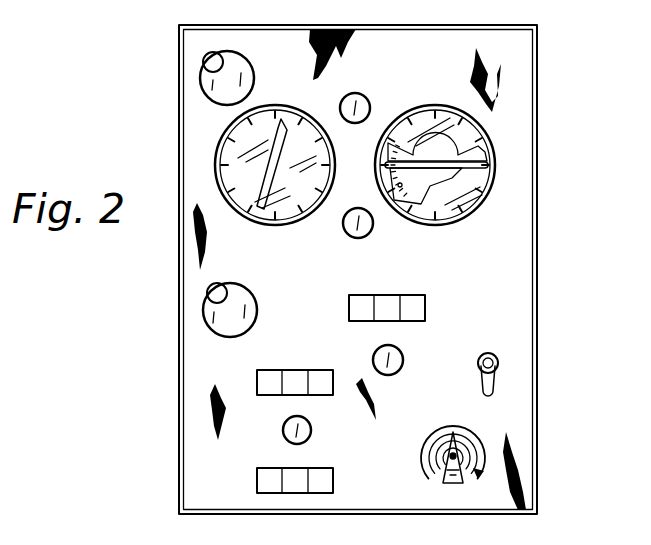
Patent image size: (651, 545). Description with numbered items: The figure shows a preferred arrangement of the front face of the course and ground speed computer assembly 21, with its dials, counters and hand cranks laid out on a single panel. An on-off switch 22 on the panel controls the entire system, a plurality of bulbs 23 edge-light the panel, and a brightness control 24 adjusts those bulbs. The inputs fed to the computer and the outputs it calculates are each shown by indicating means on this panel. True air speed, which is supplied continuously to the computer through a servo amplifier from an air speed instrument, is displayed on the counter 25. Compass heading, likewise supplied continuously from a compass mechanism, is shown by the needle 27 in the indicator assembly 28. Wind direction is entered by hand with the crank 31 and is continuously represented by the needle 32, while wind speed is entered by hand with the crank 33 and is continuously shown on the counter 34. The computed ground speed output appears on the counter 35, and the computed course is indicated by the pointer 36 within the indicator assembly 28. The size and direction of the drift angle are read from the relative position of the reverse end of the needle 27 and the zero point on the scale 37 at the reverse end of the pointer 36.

The computer assembly front face 21 is at (554, 162).
The on-off switch 22 is at (498, 364).
The bulbs 23 is at (361, 96).
The brightness control 24 is at (460, 483).
The counter 25 is at (333, 480).
The needle 27 is at (430, 187).
The indicator assembly 28 is at (462, 220).
The crank 31 is at (237, 63).
The needle 32 is at (288, 133).
The crank 33 is at (247, 298).
The counter 34 is at (425, 306).
The counter 35 is at (313, 370).
The pointer 36 is at (478, 138).
The scale 37 is at (395, 180).